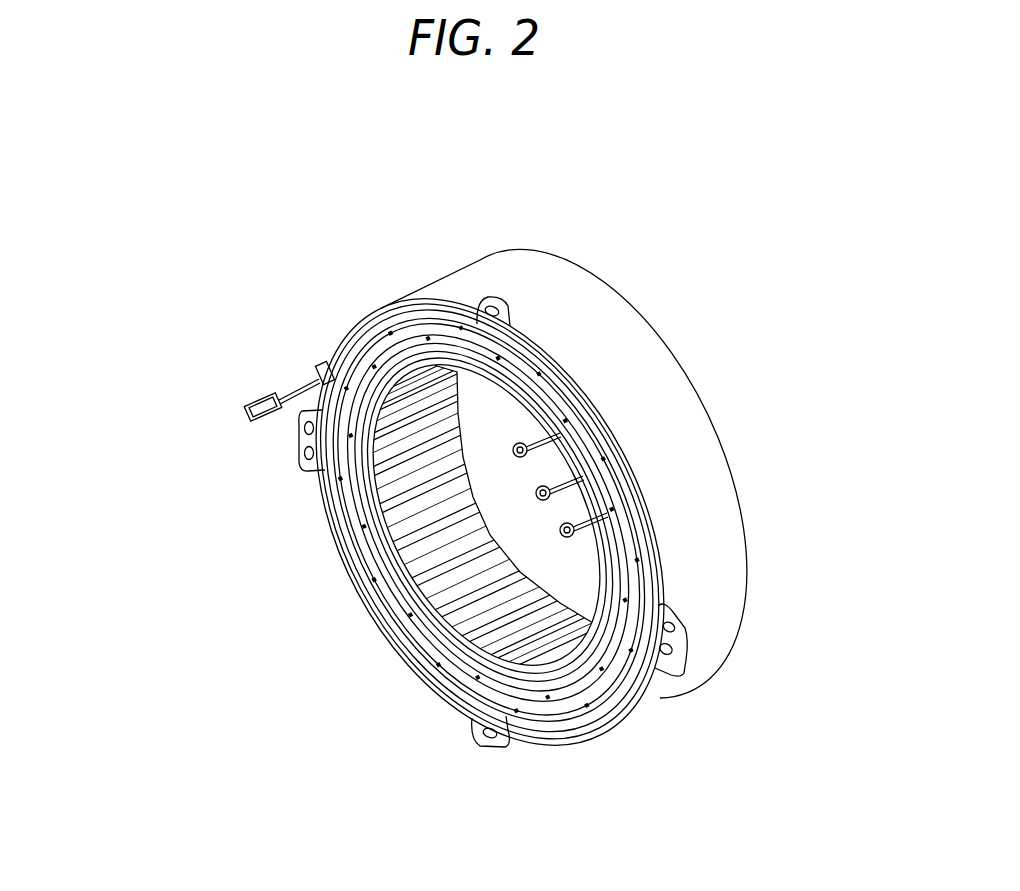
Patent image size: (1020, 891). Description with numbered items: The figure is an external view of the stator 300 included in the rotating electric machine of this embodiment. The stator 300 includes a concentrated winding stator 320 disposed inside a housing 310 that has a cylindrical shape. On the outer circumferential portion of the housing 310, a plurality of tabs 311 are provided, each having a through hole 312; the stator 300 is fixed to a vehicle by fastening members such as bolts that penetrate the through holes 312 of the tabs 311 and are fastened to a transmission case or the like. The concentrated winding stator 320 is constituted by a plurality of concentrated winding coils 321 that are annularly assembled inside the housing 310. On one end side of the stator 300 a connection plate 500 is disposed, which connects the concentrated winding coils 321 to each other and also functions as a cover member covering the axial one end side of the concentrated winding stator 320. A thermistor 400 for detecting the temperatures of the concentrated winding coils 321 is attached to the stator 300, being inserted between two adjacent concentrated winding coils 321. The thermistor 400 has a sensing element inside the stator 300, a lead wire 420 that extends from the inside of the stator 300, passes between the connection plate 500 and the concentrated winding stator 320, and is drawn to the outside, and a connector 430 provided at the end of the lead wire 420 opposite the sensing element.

The stator 300 is at (130, 261).
The housing 310 is at (653, 380).
The tab 311 is at (507, 313).
The through hole 312 is at (493, 304).
The concentrated winding stator 320 is at (445, 597).
The concentrated winding coil 321 is at (457, 640).
The thermistor 400 is at (203, 340).
The lead wire 420 is at (298, 384).
The connector 430 is at (265, 415).
The connection plate 500 is at (398, 582).